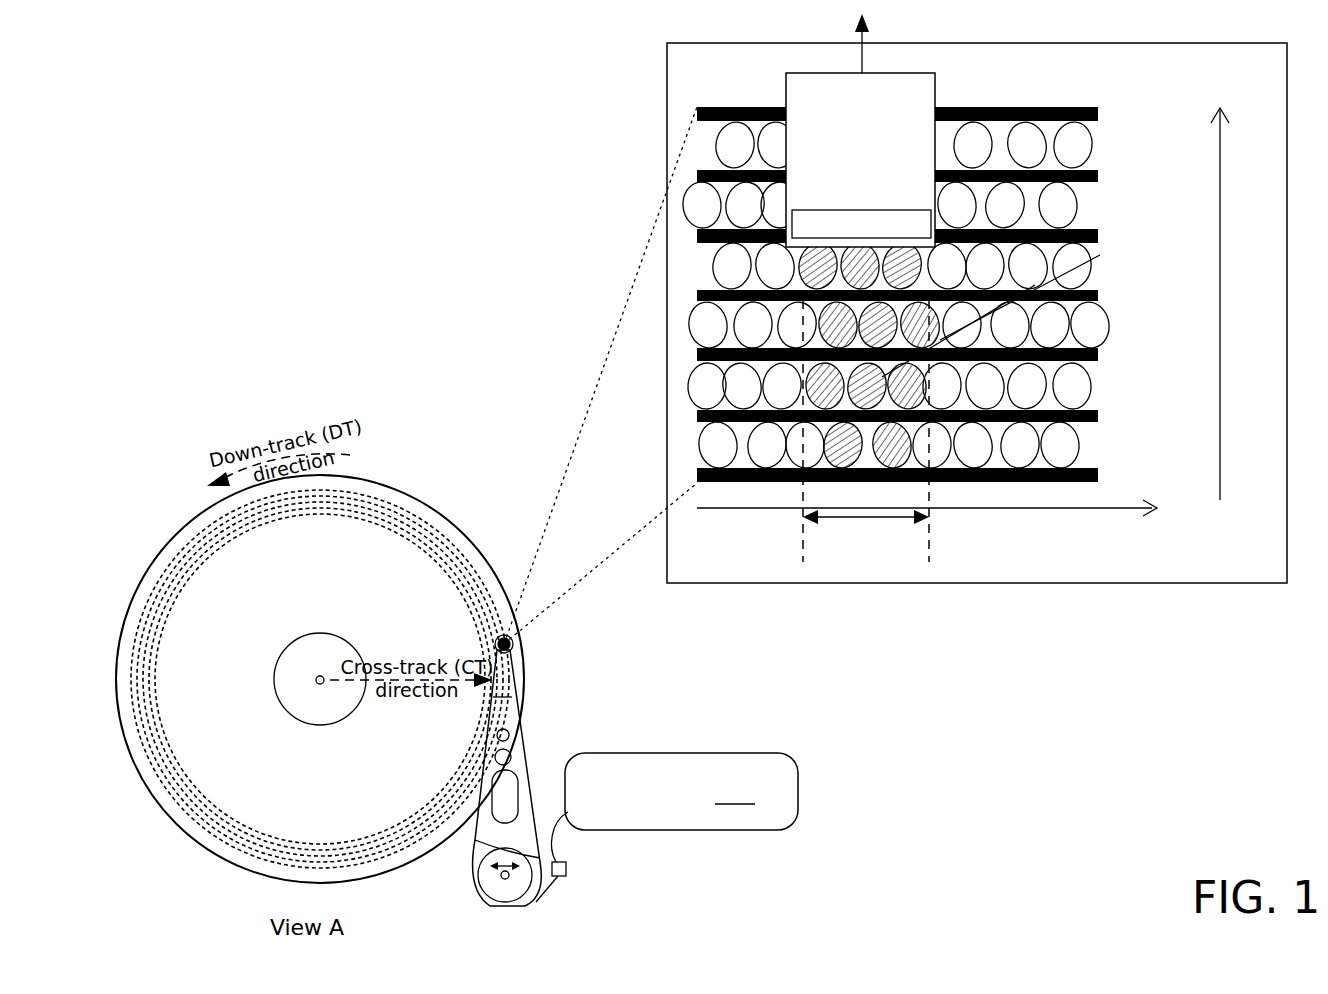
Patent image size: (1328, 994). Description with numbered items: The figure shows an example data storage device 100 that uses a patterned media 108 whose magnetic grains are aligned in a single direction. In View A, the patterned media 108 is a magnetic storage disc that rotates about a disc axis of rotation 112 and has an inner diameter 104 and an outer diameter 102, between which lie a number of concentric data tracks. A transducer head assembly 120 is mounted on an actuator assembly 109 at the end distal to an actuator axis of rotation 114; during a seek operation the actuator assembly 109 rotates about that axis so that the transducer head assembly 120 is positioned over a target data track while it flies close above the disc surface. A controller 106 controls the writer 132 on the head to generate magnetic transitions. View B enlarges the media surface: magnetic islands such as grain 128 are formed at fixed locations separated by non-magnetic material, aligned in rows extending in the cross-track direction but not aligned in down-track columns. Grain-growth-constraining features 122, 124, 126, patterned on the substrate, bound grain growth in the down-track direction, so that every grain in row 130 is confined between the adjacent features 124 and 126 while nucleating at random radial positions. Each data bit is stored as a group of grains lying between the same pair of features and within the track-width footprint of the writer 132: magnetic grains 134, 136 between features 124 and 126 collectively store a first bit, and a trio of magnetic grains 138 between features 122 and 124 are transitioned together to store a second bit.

The data storage device 100 is at (220, 292).
The outer diameter 102 is at (450, 522).
The inner diameter 104 is at (291, 702).
The controller 106 is at (681, 791).
The patterned media 108 is at (383, 483).
The actuator assembly 109 is at (538, 904).
The disc axis of rotation 112 is at (332, 670).
The actuator axis of rotation 114 is at (505, 875).
The transducer head assembly 120 is at (512, 644).
The grain-growth-constraining feature 122 is at (1098, 355).
The grain-growth-constraining feature 124 is at (1098, 416).
The grain-growth-constraining feature 126 is at (1098, 475).
The grain 128 is at (690, 375).
The row 130 is at (672, 455).
The writer 132 is at (913, 235).
The magnetic grain 134 is at (803, 490).
The magnetic grain 136 is at (929, 488).
The trio of magnetic grains 138 is at (1100, 255).